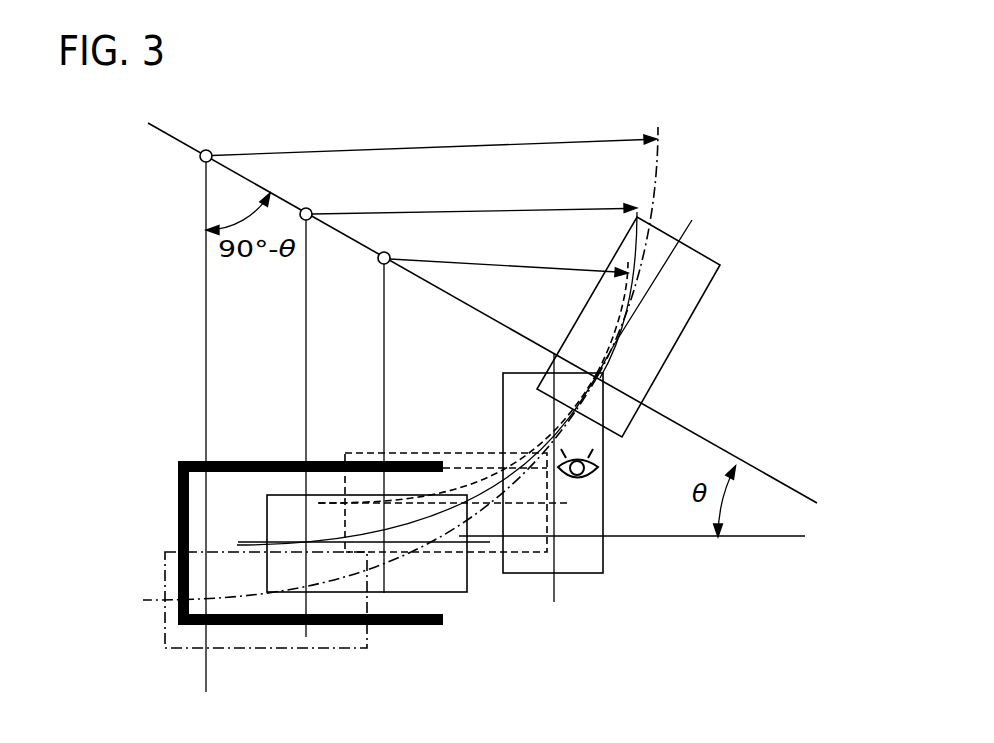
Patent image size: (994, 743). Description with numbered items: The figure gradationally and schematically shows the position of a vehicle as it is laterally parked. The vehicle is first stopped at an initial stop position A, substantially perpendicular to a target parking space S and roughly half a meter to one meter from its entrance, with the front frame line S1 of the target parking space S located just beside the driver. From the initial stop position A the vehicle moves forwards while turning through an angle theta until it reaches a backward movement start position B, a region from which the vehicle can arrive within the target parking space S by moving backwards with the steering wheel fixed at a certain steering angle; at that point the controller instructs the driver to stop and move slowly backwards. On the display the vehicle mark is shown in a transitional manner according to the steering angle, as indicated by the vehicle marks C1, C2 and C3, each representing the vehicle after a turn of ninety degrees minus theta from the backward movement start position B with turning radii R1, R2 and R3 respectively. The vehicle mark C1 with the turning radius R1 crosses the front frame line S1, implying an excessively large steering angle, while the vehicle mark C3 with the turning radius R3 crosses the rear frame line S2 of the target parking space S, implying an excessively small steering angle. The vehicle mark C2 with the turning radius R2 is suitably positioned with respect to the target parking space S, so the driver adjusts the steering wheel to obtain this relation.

The initial stop position A is at (580, 577).
The backward movement start position B is at (685, 332).
The target parking space S is at (318, 536).
The front frame line S1 is at (330, 460).
The rear frame line S2 is at (432, 625).
The vehicle mark C1 is at (465, 455).
The vehicle mark C2 is at (453, 593).
The vehicle mark C3 is at (315, 650).
The turning radius R1 is at (509, 258).
The turning radius R2 is at (474, 200).
The turning radius R3 is at (434, 138).